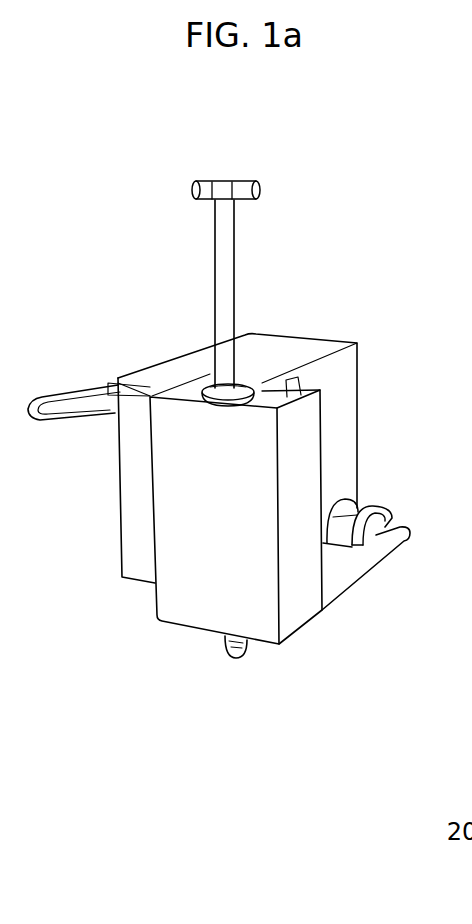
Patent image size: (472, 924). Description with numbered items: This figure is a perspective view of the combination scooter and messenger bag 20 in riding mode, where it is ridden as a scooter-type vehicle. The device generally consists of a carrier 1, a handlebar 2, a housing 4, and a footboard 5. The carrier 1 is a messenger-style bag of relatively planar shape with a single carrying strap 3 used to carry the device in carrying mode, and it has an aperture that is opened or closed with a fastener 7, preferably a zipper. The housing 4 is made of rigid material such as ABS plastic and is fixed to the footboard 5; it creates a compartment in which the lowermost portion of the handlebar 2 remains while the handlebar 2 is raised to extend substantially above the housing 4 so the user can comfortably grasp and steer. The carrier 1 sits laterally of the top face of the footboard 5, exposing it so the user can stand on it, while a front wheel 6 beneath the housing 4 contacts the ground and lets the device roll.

The carrier 1 is at (337, 368).
The handlebar 2 is at (228, 203).
The carrying strap 3 is at (37, 408).
The housing 4 is at (205, 582).
The footboard 5 is at (337, 568).
The front wheel 6 is at (232, 658).
The fastener 7 is at (213, 368).
The combination scooter and messenger bag 20 is at (160, 700).